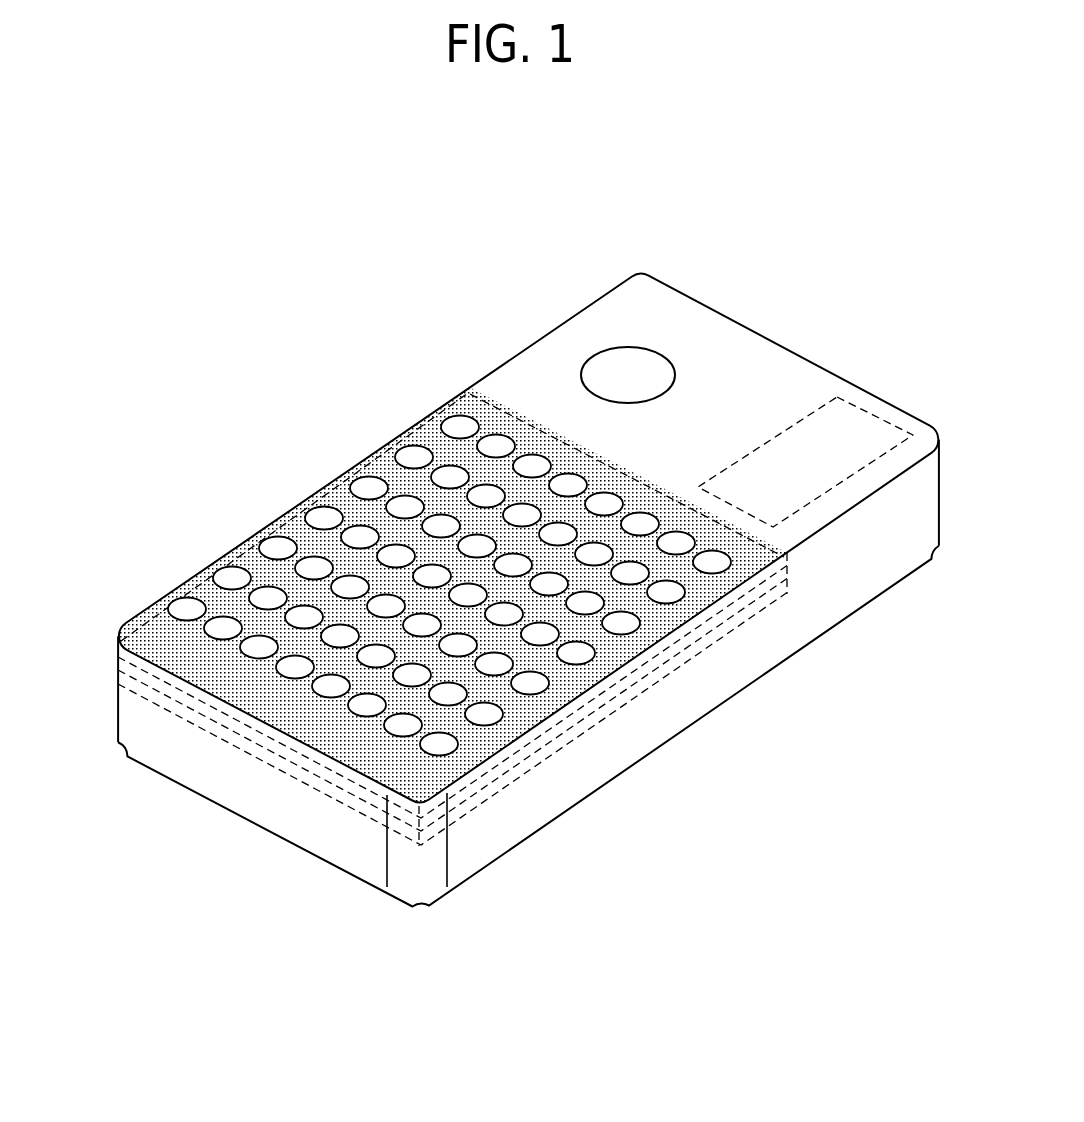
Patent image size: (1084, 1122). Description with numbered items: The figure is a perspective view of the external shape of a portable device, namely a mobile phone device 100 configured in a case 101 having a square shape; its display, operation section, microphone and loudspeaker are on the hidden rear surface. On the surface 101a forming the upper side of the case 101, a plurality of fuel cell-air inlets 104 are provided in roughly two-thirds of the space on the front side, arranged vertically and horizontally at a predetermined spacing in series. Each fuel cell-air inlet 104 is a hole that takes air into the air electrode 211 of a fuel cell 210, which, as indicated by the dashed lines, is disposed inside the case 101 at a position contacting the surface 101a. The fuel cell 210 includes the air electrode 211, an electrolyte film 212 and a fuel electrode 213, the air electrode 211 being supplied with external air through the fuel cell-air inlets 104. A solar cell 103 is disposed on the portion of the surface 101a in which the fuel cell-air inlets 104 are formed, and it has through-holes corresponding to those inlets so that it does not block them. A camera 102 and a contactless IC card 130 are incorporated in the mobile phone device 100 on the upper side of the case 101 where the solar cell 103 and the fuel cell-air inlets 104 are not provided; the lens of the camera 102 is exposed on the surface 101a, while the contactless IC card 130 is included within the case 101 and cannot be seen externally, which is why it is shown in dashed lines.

The mobile phone device 100 is at (691, 168).
The case 101 is at (444, 401).
The surface 101a is at (722, 355).
The camera 102 is at (622, 352).
The solar cell 103 is at (327, 743).
The fuel cell-air inlet 104 is at (229, 573).
The contactless IC card 130 is at (868, 412).
The fuel cell 210 is at (200, 708).
The air electrode 211 is at (707, 616).
The electrolyte film 212 is at (603, 700).
The fuel electrode 213 is at (560, 748).